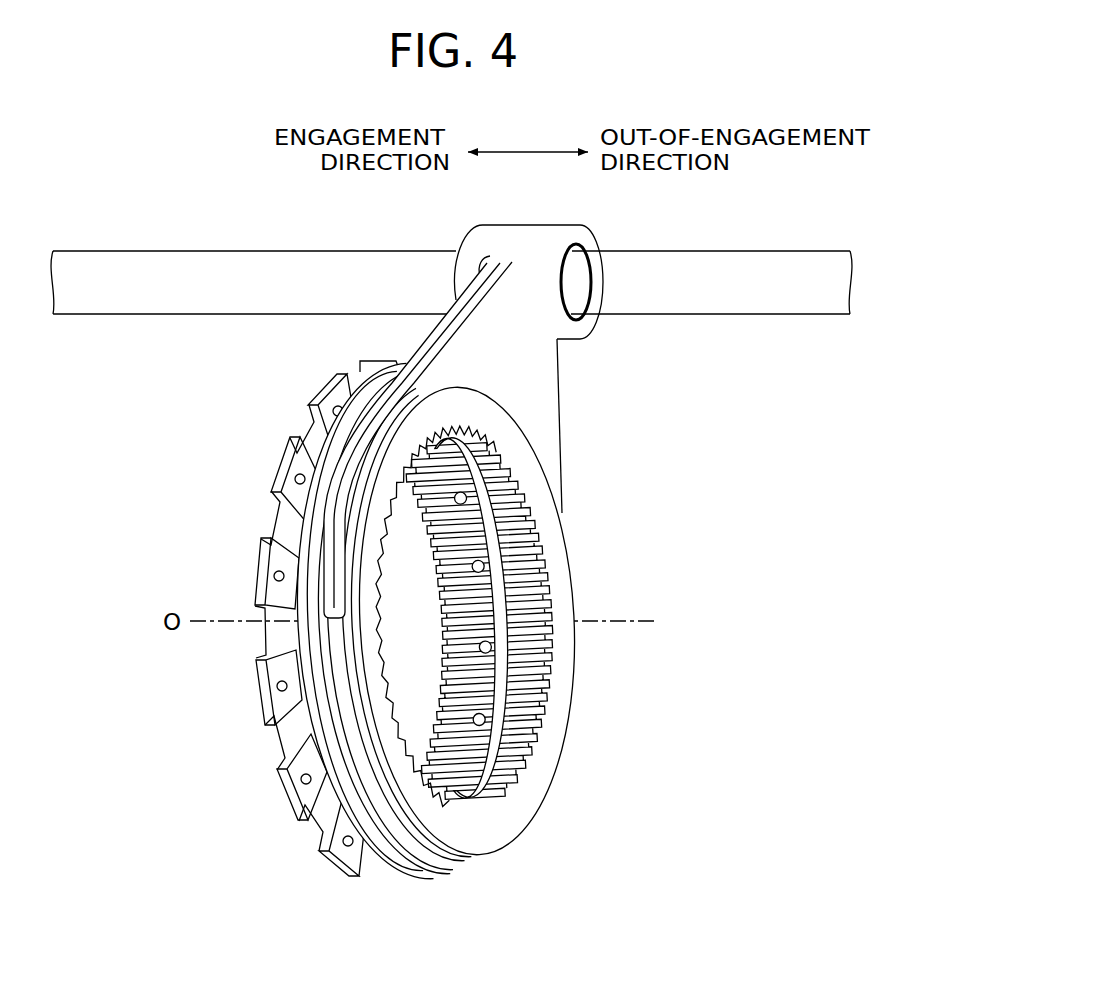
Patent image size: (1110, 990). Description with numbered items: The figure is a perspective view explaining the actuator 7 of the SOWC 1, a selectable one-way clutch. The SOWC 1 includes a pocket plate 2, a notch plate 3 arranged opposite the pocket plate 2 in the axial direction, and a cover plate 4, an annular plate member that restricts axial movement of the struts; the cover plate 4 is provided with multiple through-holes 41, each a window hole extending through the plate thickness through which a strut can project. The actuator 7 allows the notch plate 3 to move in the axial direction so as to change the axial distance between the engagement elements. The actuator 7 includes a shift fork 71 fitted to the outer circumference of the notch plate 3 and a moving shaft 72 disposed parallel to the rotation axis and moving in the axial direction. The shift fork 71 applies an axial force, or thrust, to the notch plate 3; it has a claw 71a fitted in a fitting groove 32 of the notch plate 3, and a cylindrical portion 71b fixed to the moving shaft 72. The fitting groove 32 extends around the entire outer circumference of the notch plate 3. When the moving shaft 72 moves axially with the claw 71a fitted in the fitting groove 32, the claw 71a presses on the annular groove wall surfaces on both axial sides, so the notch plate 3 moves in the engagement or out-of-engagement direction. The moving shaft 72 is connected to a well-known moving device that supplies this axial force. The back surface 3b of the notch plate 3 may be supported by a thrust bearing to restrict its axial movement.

The SOWC 1 is at (422, 589).
The pocket plate 2 is at (295, 657).
The notch plate 3 is at (501, 619).
The back surface 3b is at (553, 700).
The cover plate 4 is at (403, 860).
The fitting groove 32 is at (343, 692).
The through-hole 41 is at (272, 680).
The actuator 7 is at (451, 421).
The shift fork 71 is at (428, 421).
The claw 71a is at (343, 533).
The cylindrical portion 71b is at (583, 330).
The moving shaft 72 is at (730, 295).